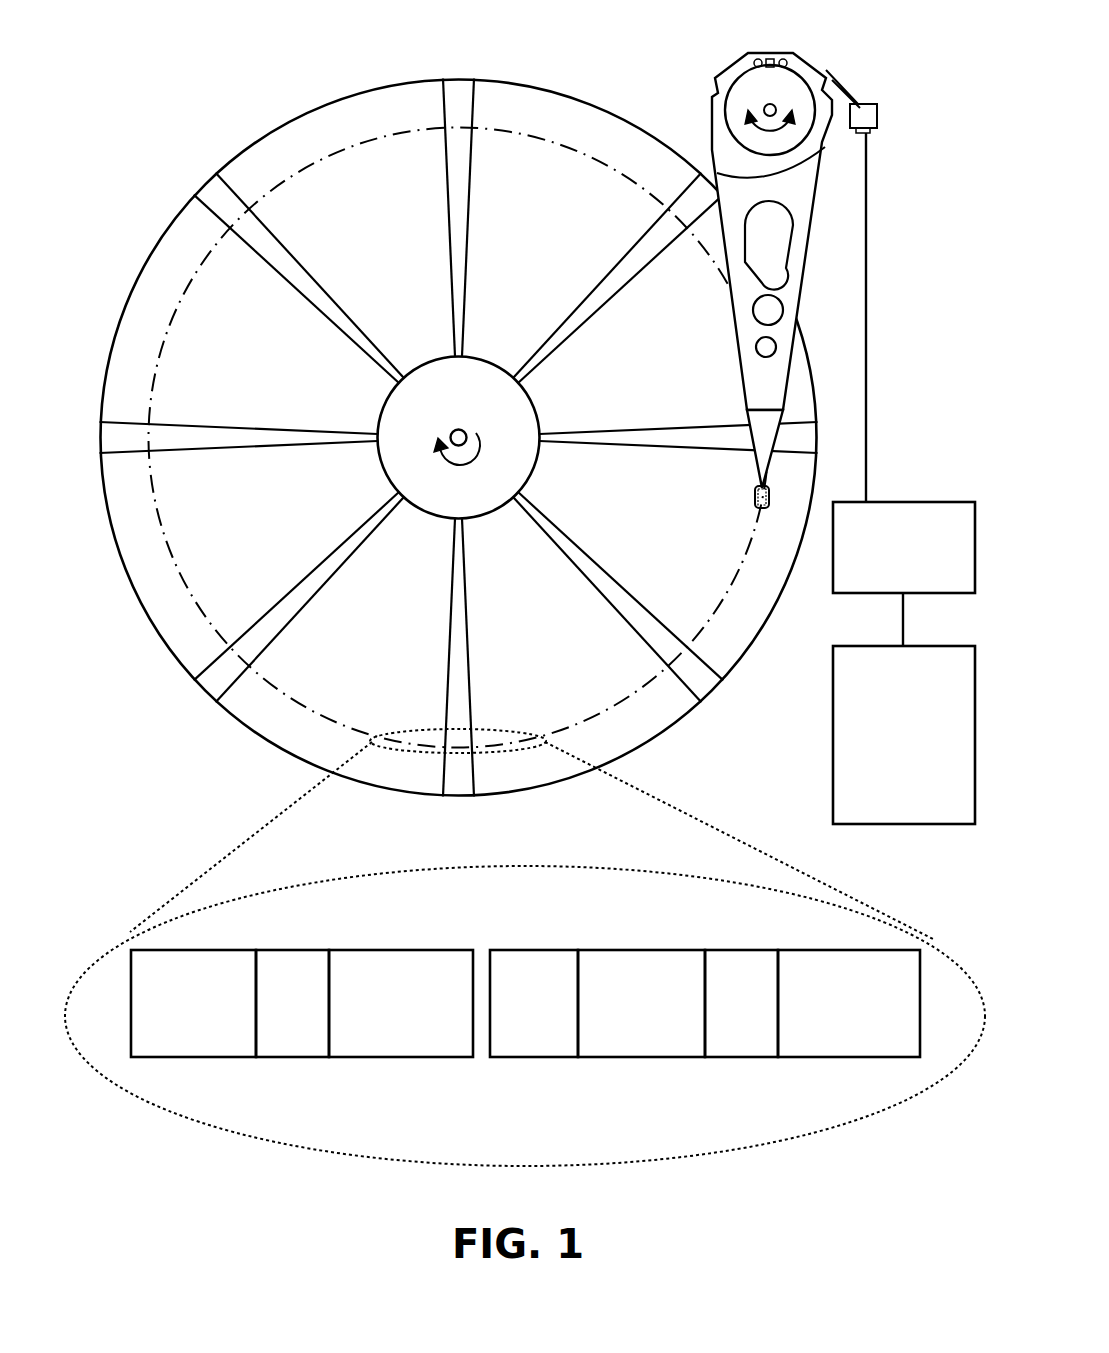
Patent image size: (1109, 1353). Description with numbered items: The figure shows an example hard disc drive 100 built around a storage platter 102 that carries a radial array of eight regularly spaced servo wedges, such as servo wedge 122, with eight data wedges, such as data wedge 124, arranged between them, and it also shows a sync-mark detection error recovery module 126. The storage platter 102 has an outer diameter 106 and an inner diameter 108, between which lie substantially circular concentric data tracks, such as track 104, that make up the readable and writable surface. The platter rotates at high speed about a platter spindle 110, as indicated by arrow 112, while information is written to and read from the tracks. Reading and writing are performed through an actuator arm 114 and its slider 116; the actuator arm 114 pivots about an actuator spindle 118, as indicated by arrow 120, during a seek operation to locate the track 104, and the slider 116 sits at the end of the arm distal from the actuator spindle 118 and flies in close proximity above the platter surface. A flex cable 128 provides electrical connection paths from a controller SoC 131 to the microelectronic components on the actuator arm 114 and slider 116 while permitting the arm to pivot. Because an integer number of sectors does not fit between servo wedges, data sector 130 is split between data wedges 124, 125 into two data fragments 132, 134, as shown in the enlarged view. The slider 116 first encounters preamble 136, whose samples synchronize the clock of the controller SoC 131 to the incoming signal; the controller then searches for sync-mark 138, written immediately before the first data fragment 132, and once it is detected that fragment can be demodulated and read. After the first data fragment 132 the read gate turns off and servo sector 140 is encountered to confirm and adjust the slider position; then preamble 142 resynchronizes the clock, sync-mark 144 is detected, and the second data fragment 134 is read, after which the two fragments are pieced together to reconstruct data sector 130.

The hard disc drive 100 is at (172, 112).
The storage platter 102 is at (555, 672).
The data track 104 is at (725, 592).
The outer diameter 106 is at (395, 82).
The inner diameter 108 is at (378, 405).
The platter spindle 110 is at (450, 428).
The arrow 112 is at (475, 441).
The actuator arm 114 is at (813, 193).
The slider 116 is at (755, 492).
The actuator spindle 118 is at (762, 106).
The arrow 120 is at (790, 112).
The servo wedge 122 is at (459, 815).
The data wedge 124 is at (240, 758).
The data wedge 125 is at (668, 762).
The sync-mark detection error recovery module 126 is at (886, 817).
The flex cable 128 is at (868, 462).
The data sector 130 is at (509, 922).
The controller SoC 131 is at (886, 588).
The data fragment 0 132 is at (383, 1046).
The data fragment 1 134 is at (831, 1046).
The preamble 136 is at (175, 1036).
The sync-mark 138 is at (274, 1046).
The servo sector 140 is at (516, 1034).
The preamble 142 is at (623, 1034).
The sync-mark 144 is at (723, 1046).